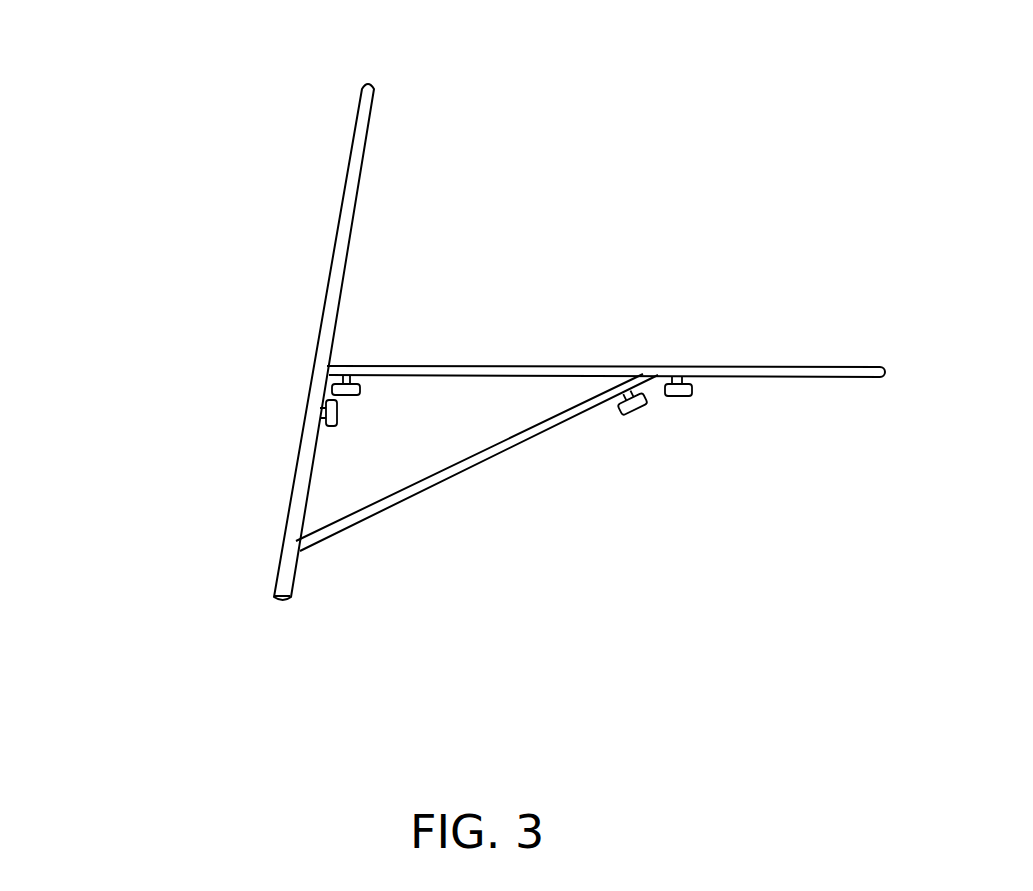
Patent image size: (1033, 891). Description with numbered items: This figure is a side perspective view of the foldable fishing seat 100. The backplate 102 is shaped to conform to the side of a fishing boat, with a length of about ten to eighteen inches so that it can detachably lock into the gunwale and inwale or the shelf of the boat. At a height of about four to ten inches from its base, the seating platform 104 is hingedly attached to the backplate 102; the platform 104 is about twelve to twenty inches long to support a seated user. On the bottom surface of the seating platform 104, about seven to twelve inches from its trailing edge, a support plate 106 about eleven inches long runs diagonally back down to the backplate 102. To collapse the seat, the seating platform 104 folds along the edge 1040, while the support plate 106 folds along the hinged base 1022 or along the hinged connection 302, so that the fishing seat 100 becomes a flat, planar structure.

The foldable fishing seat 100 is at (178, 213).
The backplate 102 is at (360, 96).
The hinged base 1022 is at (273, 594).
The seating platform 104 is at (860, 367).
The edge 1040 is at (316, 370).
The support plate 106 is at (473, 469).
The hinged connection 302 is at (660, 392).